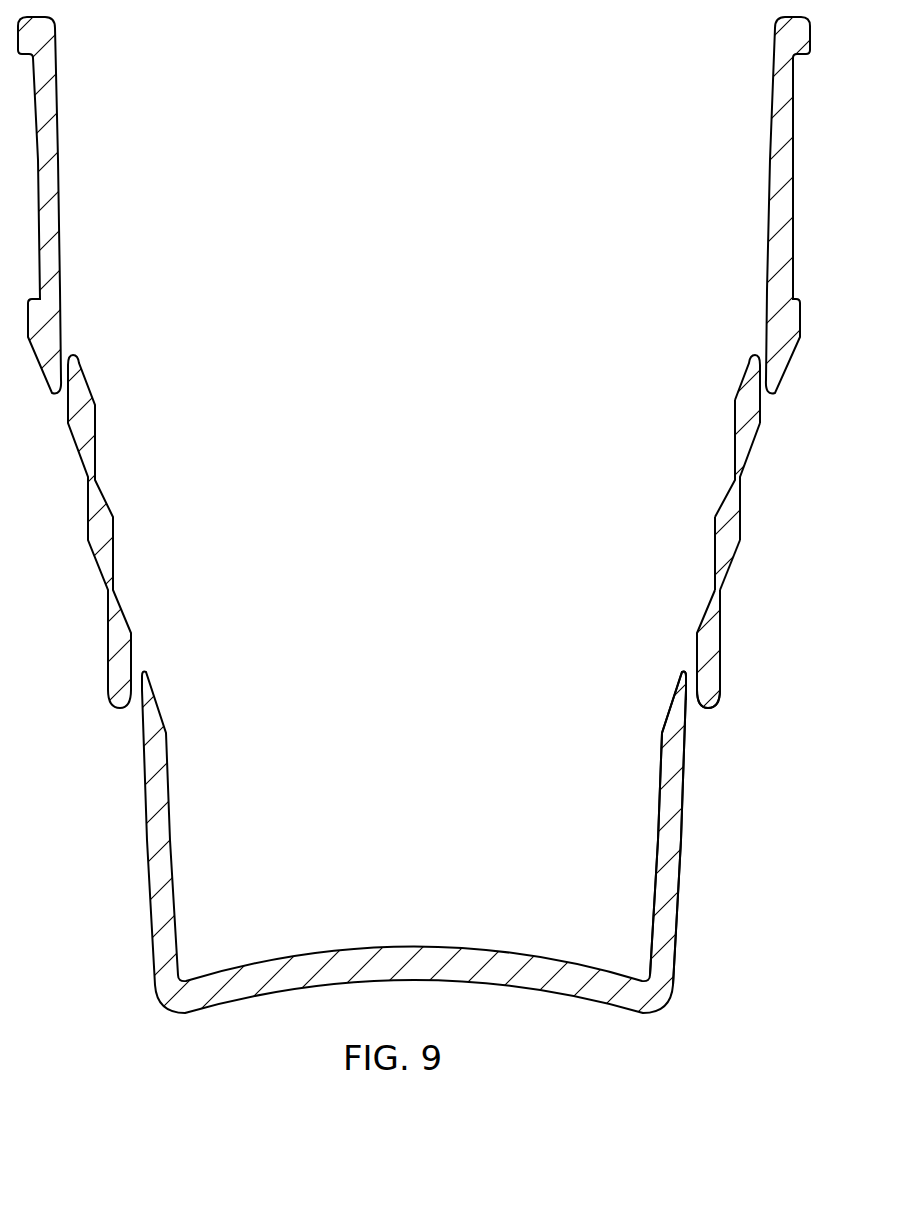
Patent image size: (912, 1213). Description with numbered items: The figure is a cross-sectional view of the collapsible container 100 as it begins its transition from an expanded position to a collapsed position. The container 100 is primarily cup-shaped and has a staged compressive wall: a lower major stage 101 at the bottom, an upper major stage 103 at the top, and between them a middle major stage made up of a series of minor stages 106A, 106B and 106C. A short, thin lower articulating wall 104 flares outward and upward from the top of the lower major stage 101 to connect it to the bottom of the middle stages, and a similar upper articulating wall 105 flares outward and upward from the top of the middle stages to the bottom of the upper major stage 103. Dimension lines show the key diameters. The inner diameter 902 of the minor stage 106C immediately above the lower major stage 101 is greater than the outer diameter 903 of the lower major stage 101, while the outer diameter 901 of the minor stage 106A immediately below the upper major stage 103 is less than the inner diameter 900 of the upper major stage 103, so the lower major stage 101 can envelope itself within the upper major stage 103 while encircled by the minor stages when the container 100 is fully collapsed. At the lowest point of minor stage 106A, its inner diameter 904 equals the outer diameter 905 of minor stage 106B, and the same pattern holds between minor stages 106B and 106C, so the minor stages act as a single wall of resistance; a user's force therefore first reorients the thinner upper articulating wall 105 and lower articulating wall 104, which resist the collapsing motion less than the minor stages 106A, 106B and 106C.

The collapsible container 100 is at (142, 827).
The lower major stage 101 is at (661, 842).
The upper major stage 103 is at (775, 167).
The lower articulating wall 104 is at (695, 688).
The upper articulating wall 105 is at (766, 373).
The minor stage 106A is at (748, 415).
The minor stage 106B is at (732, 503).
The minor stage 106C is at (705, 635).
The inner diameter of the upper major stage 900 is at (758, 252).
The outer diameter of minor stage 106A 901 is at (758, 382).
The inner diameter of minor stage 106C 902 is at (688, 652).
The outer diameter of the lower major stage 903 is at (684, 735).
The inner diameter of minor stage 106A 904 is at (733, 452).
The outer diameter of minor stage 106B 905 is at (738, 527).